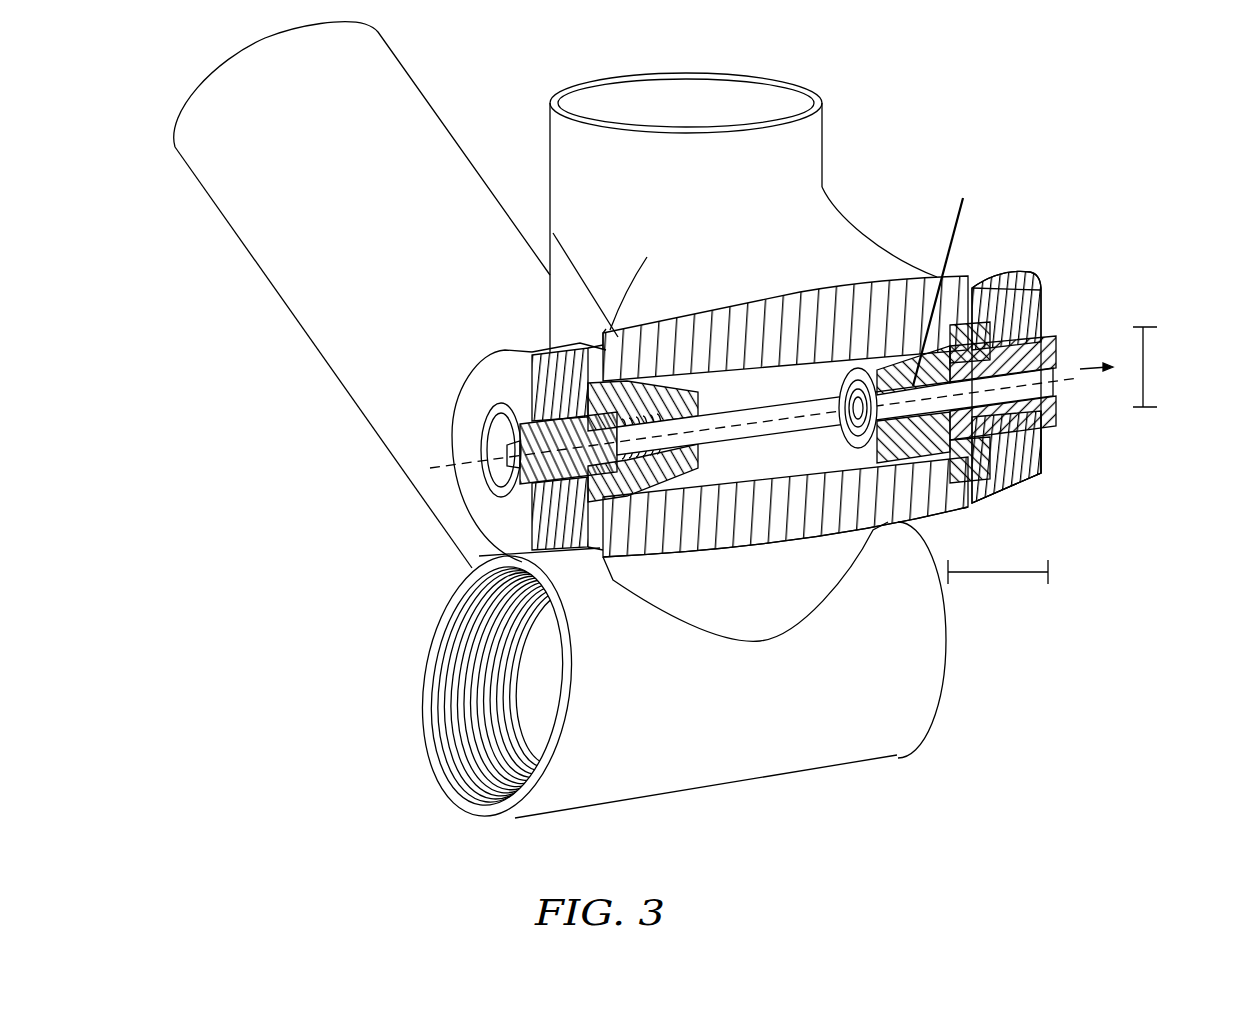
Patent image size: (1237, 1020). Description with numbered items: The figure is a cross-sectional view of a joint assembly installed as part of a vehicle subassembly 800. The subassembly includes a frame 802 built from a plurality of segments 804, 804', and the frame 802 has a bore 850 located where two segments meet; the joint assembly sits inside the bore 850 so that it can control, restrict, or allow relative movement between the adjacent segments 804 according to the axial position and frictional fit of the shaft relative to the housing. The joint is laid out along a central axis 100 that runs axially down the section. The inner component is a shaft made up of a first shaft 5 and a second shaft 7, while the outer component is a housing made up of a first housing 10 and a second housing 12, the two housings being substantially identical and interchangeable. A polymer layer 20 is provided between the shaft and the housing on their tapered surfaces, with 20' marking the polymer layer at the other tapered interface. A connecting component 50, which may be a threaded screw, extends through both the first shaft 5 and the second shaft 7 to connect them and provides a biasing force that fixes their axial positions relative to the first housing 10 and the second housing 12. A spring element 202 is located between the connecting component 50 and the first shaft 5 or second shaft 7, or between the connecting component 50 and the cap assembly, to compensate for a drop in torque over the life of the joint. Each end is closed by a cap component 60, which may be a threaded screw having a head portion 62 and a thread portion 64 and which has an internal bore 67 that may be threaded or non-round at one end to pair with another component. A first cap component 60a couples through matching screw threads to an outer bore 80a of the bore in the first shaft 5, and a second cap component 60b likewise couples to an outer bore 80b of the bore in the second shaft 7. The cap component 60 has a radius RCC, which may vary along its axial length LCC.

The vehicle subassembly 800 is at (697, 439).
The frame 802 is at (807, 142).
The segment 804' is at (865, 204).
The segment 804 is at (785, 677).
The bore 850 is at (808, 340).
The upper joint 20' is at (579, 228).
The polymer layer 20 is at (745, 598).
The first housing 10 is at (667, 540).
The first shaft 5 is at (600, 528).
The connecting component 50 is at (899, 528).
The second housing 12 is at (876, 357).
The spring element 202 is at (947, 276).
The second shaft 7 is at (957, 335).
The thread portion 64 is at (992, 335).
The cap component 60 is at (1046, 325).
The first cap component 60a is at (483, 408).
The second cap component 60b is at (964, 482).
The head portion 62 is at (1048, 440).
The internal bore 67 is at (1052, 362).
The central axis 100 is at (1058, 378).
The outer bore 80a is at (612, 482).
The outer bore 80b is at (1019, 482).
The radius of the cap component RCC is at (1148, 372).
The axial length of the cap component LCC is at (998, 574).